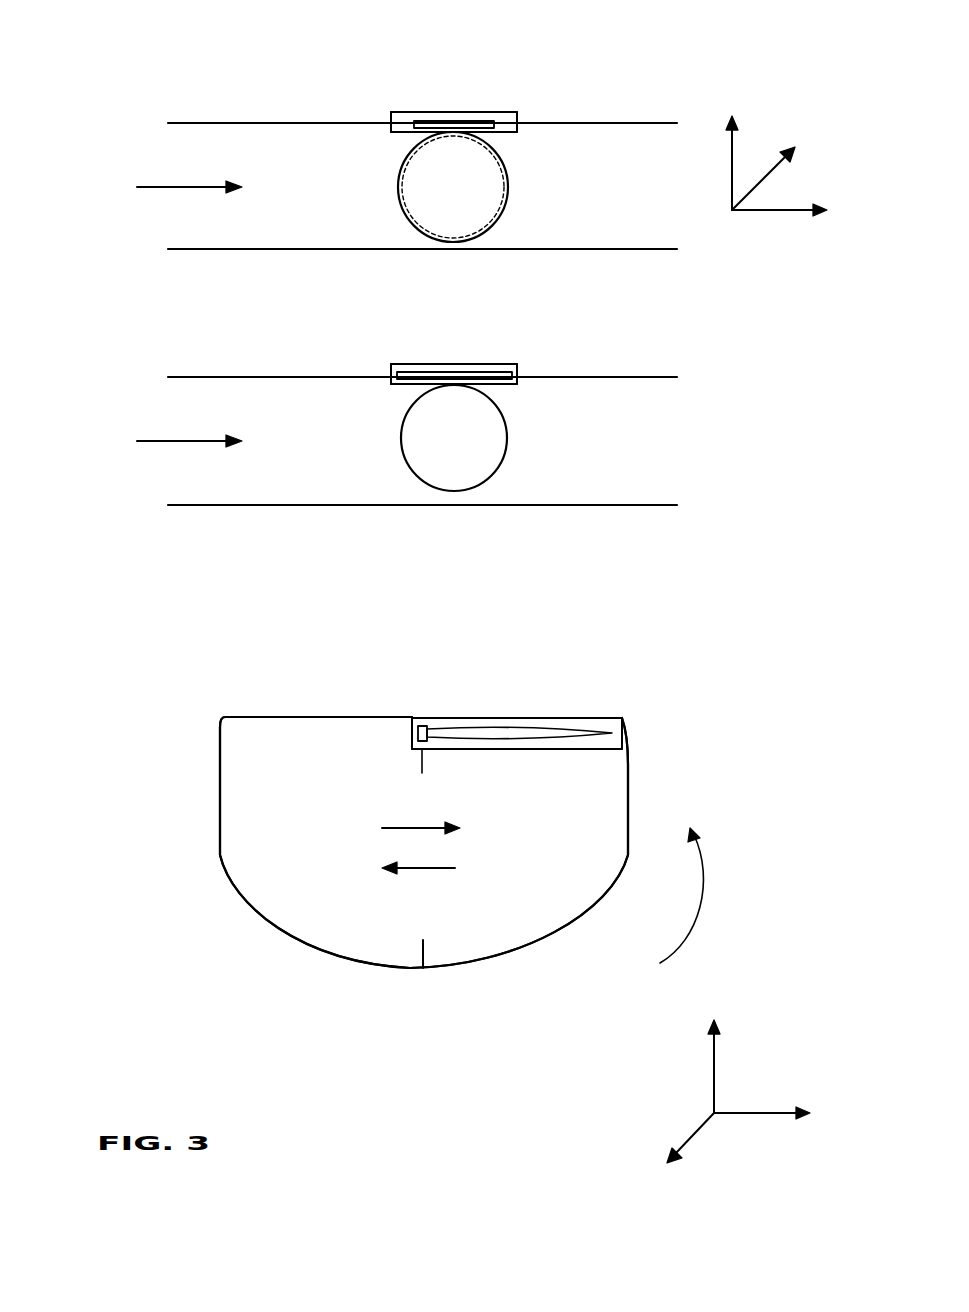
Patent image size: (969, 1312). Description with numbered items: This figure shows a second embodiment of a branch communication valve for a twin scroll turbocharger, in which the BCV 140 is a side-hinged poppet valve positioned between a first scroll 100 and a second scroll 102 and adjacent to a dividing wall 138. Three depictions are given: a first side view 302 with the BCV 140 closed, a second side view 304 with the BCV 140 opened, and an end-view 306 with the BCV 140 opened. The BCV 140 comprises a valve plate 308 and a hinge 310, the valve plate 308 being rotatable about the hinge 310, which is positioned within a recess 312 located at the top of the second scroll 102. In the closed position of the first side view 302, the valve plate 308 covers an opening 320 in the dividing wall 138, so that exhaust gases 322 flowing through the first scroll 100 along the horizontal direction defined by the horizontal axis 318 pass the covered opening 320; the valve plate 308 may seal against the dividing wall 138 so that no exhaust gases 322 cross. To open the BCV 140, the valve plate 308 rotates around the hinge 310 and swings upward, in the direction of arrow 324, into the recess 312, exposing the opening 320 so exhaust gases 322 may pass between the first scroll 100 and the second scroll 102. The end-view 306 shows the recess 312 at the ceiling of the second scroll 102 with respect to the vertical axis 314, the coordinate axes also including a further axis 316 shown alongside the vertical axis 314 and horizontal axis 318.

The first scroll 100 is at (185, 123).
The second scroll 102 is at (533, 932).
The dividing wall 138 is at (425, 952).
The branch communication valve 140 is at (436, 72).
The first side view 302 is at (648, 42).
The second side view 304 is at (663, 316).
The end-view 306 is at (645, 615).
The valve plate 308 is at (398, 188).
The hinge 310 is at (437, 120).
The recess 312 is at (500, 112).
The vertical axis 314 is at (734, 147).
The depth axis 316 is at (770, 165).
The horizontal axis 318 is at (778, 212).
The opening 320 is at (505, 185).
The exhaust gases 322 is at (186, 187).
The arrow 324 is at (707, 920).